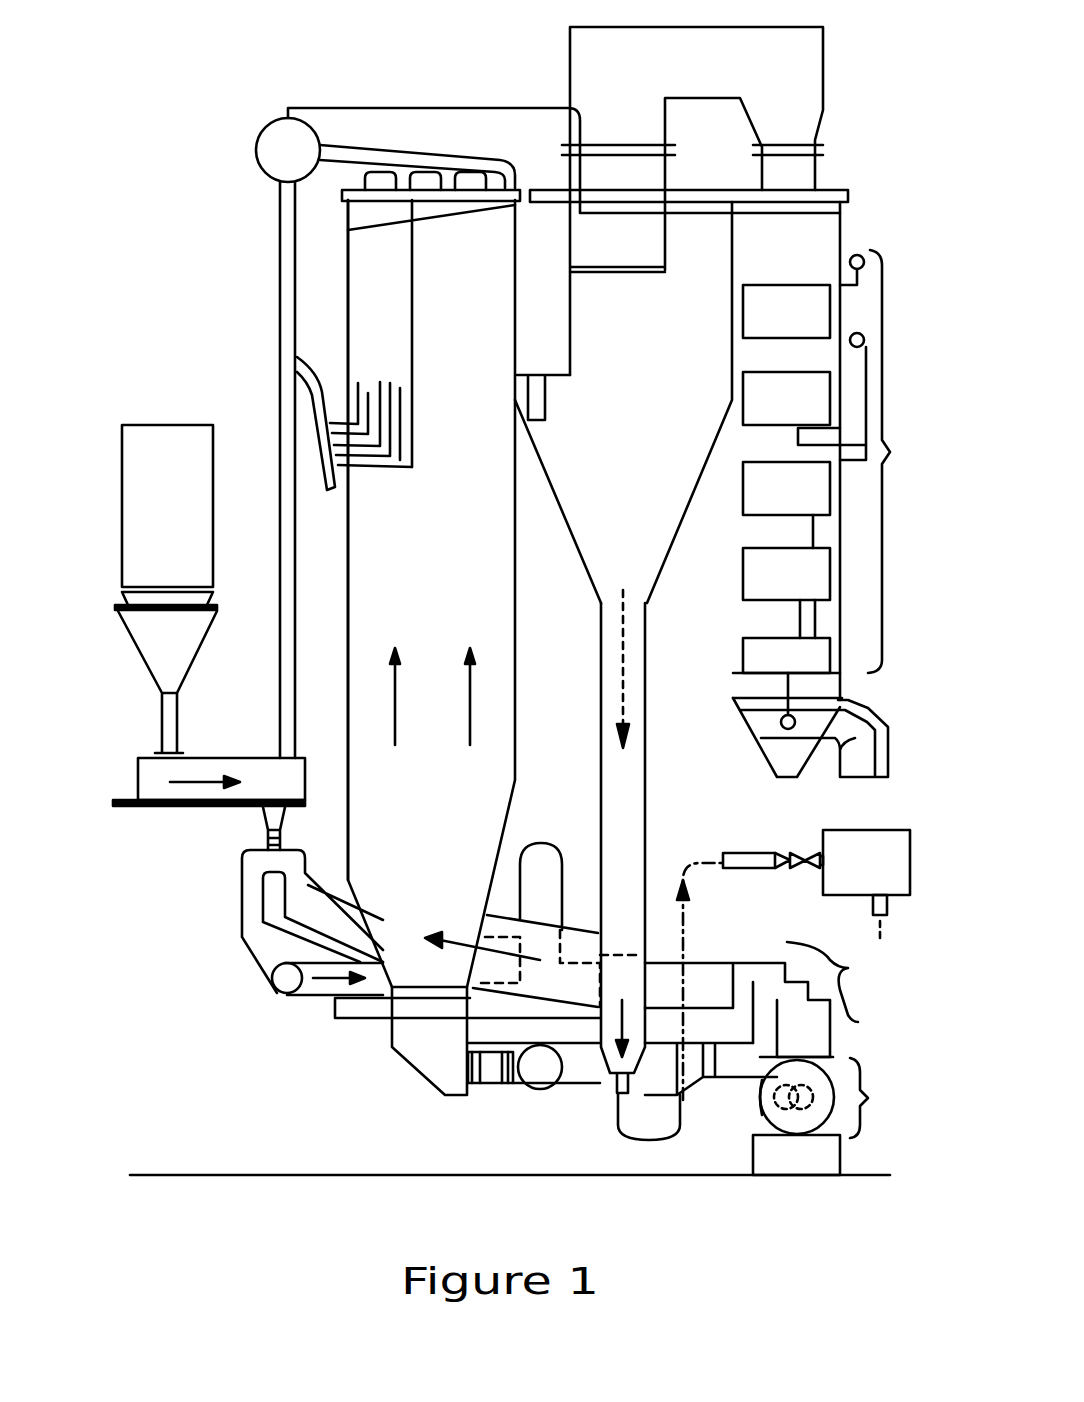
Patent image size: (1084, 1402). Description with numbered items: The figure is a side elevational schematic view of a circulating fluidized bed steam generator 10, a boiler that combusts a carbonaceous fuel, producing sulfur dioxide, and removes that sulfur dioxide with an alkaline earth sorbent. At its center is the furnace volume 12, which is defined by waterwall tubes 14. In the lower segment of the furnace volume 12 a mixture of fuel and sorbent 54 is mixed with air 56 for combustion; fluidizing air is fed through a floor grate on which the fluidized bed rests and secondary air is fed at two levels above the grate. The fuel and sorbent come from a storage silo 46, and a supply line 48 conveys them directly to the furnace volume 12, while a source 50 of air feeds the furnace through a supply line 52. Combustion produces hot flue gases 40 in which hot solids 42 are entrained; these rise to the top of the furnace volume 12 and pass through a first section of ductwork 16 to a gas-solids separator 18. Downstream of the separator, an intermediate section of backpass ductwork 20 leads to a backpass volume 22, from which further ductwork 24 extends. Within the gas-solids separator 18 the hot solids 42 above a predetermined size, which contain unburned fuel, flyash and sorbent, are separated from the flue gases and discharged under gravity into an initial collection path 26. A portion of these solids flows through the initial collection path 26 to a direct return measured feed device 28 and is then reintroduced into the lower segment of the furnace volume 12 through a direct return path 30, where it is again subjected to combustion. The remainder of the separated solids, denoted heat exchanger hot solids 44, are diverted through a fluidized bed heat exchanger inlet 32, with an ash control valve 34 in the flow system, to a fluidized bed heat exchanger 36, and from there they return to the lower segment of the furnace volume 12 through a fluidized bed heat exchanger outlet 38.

The circulating fluidized bed steam generator 10 is at (195, 953).
The furnace volume 12 is at (380, 553).
The waterwall tubes 14 is at (345, 655).
The first section of ductwork 16 is at (560, 320).
The gas-solids separator 18 is at (615, 448).
The intermediate section of backpass ductwork 20 is at (585, 70).
The backpass volume 22 is at (833, 474).
The further ductwork 24 is at (858, 707).
The initial collection path 26 is at (623, 683).
The direct return measured feed device 28 is at (495, 895).
The direct return path 30 is at (470, 945).
The fluidized bed heat exchanger inlet 32 is at (763, 872).
The ash control valve 34 is at (795, 855).
The fluidized bed heat exchanger 36 is at (905, 830).
The fluidized bed heat exchanger outlet 38 is at (887, 905).
The combustion gases 40 is at (395, 707).
The hot solids 42 is at (470, 707).
The heat exchanger hot solids 44 is at (622, 1013).
The storage silo 46 is at (190, 687).
The supply line 48 is at (138, 766).
The source of air 50 is at (829, 1116).
The supply line 52 is at (761, 999).
The mixture of fuel and sorbent 54 is at (215, 806).
The air 56 is at (330, 985).